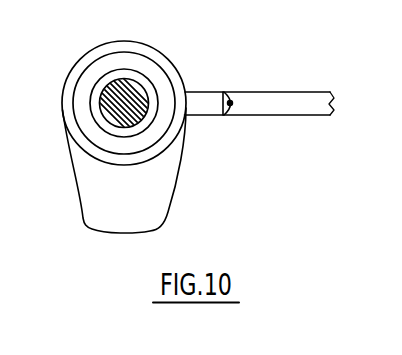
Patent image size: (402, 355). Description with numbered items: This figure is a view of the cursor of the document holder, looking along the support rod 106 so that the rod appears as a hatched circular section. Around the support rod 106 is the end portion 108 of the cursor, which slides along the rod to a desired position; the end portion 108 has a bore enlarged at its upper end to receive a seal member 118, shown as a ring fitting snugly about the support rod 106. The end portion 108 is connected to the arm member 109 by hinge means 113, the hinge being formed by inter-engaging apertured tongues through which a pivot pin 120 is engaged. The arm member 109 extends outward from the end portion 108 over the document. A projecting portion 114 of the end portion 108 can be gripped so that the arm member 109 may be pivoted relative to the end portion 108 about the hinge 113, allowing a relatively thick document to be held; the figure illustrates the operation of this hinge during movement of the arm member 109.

The support rod 106 is at (137, 100).
The end portion 108 is at (151, 55).
The arm member 109 is at (307, 107).
The hinge means 113 is at (215, 117).
The projecting portion 114 is at (130, 226).
The seal member 118 is at (96, 135).
The pivot pin 120 is at (227, 95).